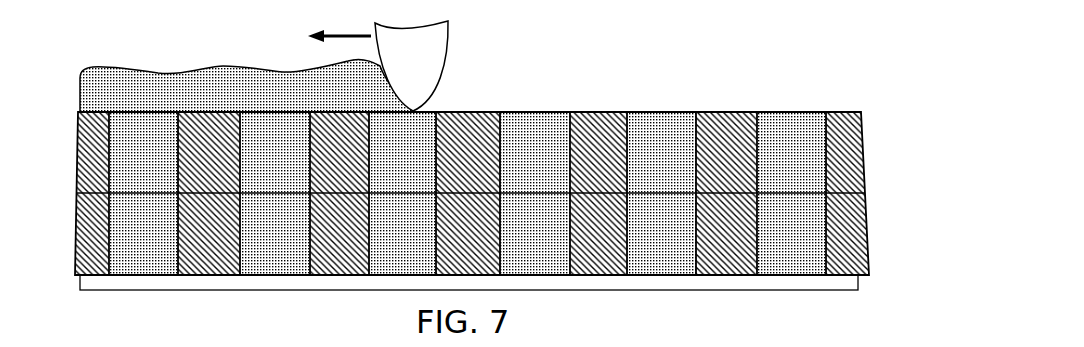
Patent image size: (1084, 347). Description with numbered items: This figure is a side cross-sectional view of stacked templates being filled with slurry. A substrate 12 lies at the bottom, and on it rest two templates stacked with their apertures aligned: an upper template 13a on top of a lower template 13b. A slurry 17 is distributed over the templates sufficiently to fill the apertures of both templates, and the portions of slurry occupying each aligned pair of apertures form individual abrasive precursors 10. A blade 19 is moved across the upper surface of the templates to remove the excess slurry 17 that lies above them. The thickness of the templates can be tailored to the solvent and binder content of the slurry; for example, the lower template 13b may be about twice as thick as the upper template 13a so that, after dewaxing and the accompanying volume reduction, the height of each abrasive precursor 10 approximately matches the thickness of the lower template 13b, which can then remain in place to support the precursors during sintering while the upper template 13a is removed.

The abrasive precursor 10 is at (517, 165).
The substrate 12 is at (845, 277).
The upper template 13a is at (850, 150).
The lower template 13b is at (850, 227).
The slurry 17 is at (203, 80).
The blade 19 is at (378, 66).